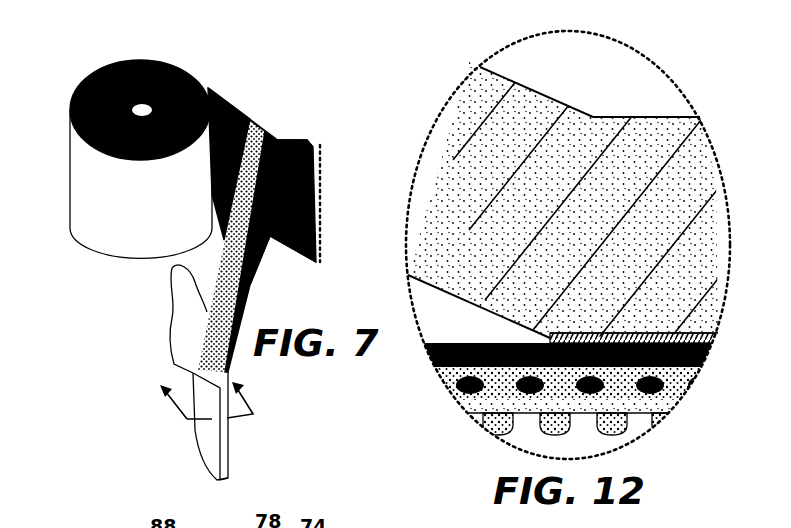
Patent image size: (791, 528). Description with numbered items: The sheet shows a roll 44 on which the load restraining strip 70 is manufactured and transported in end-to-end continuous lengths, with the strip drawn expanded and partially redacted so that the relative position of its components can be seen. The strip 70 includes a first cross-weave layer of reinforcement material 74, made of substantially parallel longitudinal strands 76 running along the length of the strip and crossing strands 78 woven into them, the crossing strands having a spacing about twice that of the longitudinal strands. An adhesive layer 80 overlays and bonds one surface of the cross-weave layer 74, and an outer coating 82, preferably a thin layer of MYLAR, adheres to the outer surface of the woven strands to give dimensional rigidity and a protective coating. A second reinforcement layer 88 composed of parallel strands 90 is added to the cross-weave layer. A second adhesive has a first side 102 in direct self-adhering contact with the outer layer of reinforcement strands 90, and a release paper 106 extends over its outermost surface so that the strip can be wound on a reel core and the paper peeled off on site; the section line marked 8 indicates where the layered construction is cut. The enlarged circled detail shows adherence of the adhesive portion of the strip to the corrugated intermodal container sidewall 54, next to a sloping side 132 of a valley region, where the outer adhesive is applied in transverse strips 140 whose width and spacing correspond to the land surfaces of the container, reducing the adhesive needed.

In FIG. 7, the roll 44 is at (144, 64).
In FIG. 7, the load restraining strip 70 is at (313, 135).
In FIG. 7, the parallel strands 90 is at (224, 98).
In FIG. 7, the adhesive layer 80 is at (276, 139).
In FIG. 7, the outer coating 82 is at (293, 139).
In FIG. 7, the longitudinal strands 76 is at (321, 165).
In FIG. 7, the cross-weave layer of reinforcement material 74 is at (318, 262).
In FIG. 12, the cross-weave layer of reinforcement material 74 is at (684, 406).
In FIG. 7, the crossing strands 78 is at (280, 250).
In FIG. 7, the second reinforcement layer 88 is at (247, 260).
In FIG. 12, the second reinforcement layer 88 is at (715, 356).
In FIG. 7, the first side of second adhesive layer 102 is at (216, 261).
In FIG. 7, the release paper 106 is at (208, 446).
In FIG. 7, the section line 8- 8 is at (202, 397).
In FIG. 12, the intermodal container sidewall 54 is at (637, 117).
In FIG. 12, the sloping side 132 is at (442, 290).
In FIG. 12, the transverse strips 140 is at (548, 338).